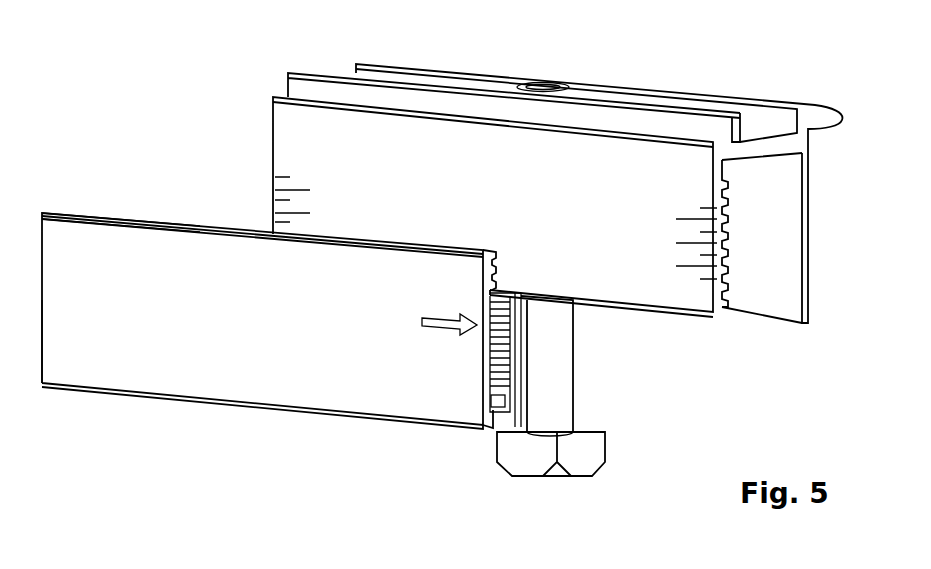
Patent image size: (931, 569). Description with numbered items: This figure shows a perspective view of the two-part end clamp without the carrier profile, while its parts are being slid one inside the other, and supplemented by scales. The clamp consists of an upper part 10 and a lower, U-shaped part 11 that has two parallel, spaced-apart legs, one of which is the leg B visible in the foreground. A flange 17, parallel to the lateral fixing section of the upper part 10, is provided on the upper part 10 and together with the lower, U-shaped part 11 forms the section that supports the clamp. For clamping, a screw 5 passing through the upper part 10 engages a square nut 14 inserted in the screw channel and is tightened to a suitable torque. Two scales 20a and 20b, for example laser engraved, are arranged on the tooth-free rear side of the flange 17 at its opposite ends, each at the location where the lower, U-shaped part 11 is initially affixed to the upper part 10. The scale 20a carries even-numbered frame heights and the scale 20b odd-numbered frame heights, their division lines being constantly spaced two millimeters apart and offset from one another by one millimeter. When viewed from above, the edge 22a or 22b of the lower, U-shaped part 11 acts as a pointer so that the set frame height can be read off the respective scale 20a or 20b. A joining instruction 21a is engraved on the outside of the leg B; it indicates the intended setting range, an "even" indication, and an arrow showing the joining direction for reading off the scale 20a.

The screw 5 is at (553, 85).
The upper part 10 is at (678, 93).
The lower, U-shaped part 11 is at (402, 428).
The square nut 14 is at (607, 447).
The flange 17 is at (610, 266).
The scale 20a is at (340, 203).
The scale 20b is at (642, 241).
The joining instruction 21a is at (316, 320).
The edge 22a is at (53, 212).
The edge 22b is at (90, 212).
The leg B is at (135, 360).